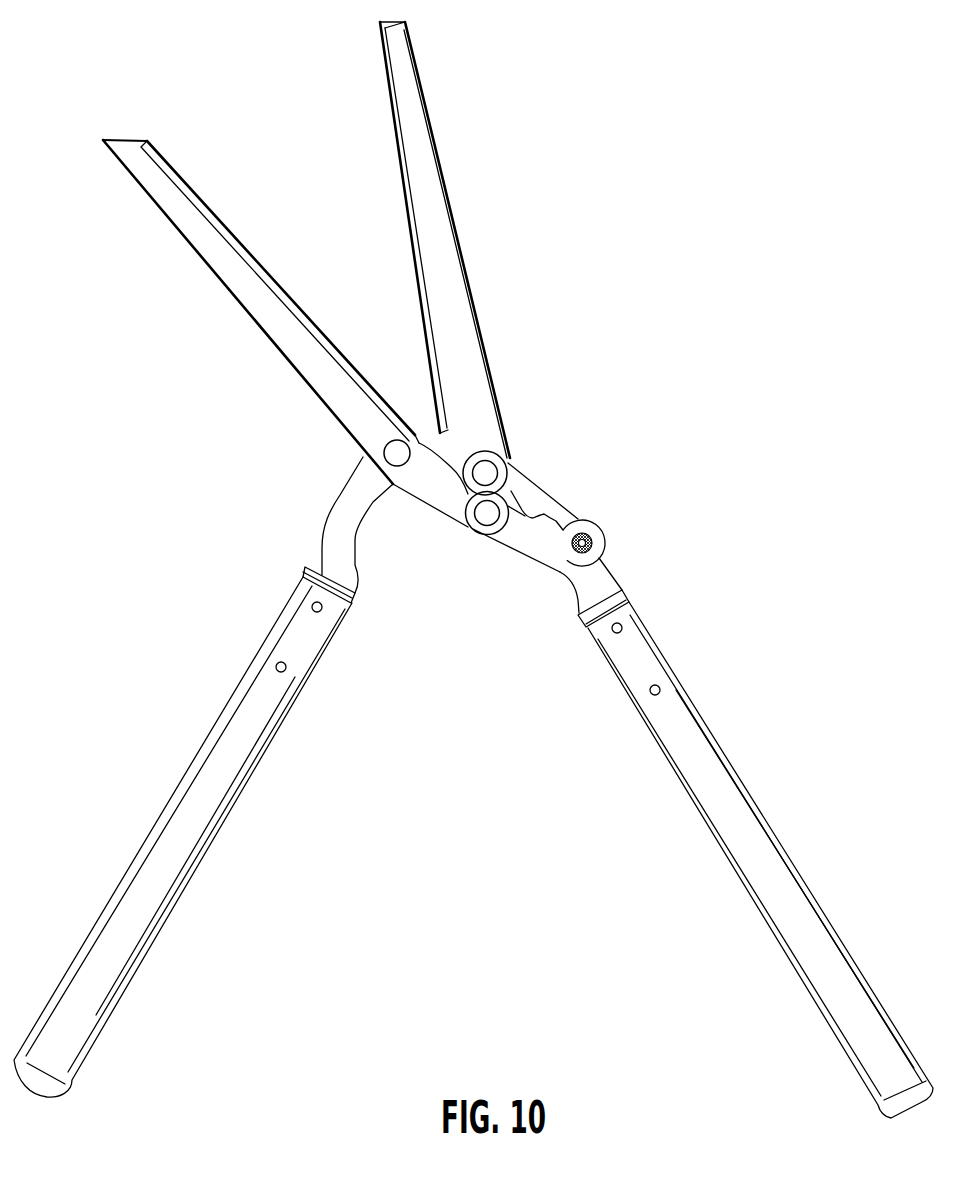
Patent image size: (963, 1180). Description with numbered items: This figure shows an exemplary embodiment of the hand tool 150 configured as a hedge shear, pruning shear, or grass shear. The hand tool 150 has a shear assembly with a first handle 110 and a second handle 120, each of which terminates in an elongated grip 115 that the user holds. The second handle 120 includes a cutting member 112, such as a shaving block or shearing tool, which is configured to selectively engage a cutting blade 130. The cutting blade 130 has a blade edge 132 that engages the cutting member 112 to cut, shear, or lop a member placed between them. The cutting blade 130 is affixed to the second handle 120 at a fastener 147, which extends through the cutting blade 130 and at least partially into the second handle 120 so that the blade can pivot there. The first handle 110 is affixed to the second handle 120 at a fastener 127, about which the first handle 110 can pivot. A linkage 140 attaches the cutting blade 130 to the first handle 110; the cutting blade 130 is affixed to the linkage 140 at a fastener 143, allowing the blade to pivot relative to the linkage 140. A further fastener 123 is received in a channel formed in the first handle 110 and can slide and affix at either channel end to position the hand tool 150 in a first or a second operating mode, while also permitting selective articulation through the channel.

The hand tool 150 is at (660, 333).
The cutting blade 130 is at (306, 374).
The blade edge 132 is at (229, 228).
The cutting member 112 is at (478, 258).
The first handle 110 is at (528, 495).
The second handle 120 is at (330, 538).
The handle grip 115 is at (240, 720).
The fastener 127 is at (489, 472).
The fastener 147 is at (395, 455).
The fastener 143 is at (488, 516).
The linkage 140 is at (527, 545).
The fastener 123 is at (593, 543).